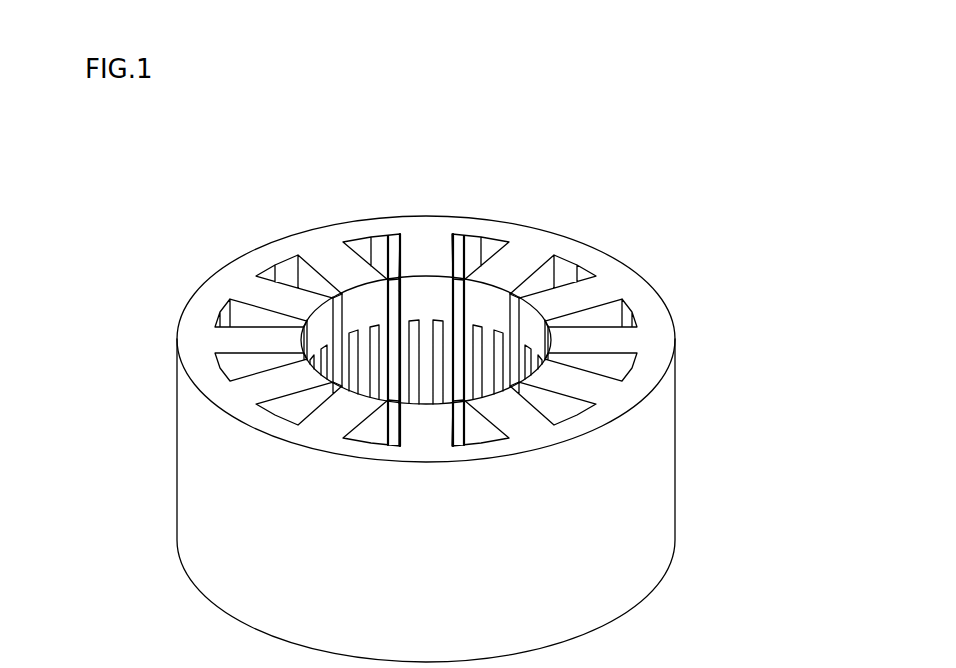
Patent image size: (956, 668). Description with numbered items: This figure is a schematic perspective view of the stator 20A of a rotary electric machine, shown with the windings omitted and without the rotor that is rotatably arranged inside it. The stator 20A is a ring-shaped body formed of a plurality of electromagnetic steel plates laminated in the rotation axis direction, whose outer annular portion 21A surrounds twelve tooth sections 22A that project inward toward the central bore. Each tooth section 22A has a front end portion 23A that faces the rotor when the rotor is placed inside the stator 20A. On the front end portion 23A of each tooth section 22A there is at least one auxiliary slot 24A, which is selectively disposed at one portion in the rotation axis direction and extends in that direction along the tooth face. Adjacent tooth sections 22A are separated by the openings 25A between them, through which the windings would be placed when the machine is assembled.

The stator 20A is at (695, 200).
The yoke (annular core back) 21A is at (650, 488).
The tooth section 22A is at (530, 260).
The front end portion 23A is at (490, 307).
The auxiliary slot 24A is at (483, 343).
The slot opening 25A is at (394, 294).